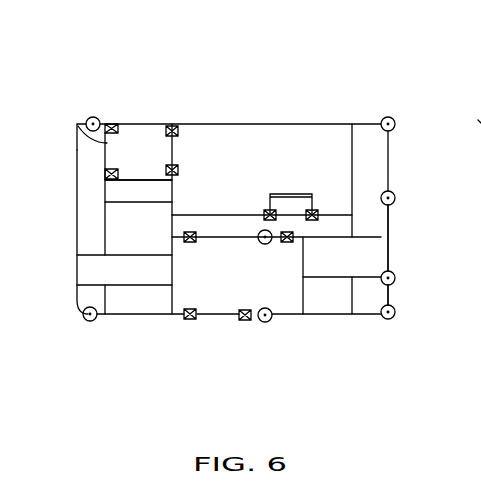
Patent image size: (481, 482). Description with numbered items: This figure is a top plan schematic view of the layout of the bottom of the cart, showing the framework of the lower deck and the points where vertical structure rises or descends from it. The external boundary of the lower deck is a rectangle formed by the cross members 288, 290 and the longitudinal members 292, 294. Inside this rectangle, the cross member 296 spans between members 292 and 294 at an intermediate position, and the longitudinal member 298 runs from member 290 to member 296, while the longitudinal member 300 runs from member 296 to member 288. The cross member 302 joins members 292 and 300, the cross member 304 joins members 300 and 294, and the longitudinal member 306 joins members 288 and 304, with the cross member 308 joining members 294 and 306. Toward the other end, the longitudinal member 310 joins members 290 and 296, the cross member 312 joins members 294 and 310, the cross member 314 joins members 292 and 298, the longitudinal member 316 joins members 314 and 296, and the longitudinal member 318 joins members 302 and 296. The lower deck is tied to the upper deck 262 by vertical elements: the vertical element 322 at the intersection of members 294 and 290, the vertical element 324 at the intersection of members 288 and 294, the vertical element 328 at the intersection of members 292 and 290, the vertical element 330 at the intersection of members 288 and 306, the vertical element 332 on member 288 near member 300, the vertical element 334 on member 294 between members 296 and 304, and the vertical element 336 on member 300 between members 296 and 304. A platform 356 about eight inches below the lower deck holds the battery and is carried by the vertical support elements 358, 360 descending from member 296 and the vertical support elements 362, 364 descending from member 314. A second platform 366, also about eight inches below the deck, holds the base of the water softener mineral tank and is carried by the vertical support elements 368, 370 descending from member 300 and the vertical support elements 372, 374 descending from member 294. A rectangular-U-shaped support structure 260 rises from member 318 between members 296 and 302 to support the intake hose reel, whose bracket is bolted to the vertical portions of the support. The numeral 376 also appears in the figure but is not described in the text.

The rectangular-U-shaped support structure 260 is at (299, 193).
The upper deck 262 is at (480, 121).
The cross member 288 is at (392, 218).
The cross member 290 is at (77, 168).
The longitudinal member 292 is at (302, 124).
The longitudinal member 294 is at (150, 316).
The cross member 296 is at (173, 152).
The longitudinal member 298 is at (88, 257).
The longitudinal member 300 is at (370, 238).
The cross member 302 is at (366, 123).
The cross member 304 is at (303, 291).
The longitudinal member 306 is at (369, 274).
The cross member 308 is at (352, 300).
The longitudinal member 310 is at (93, 285).
The cross member 312 is at (107, 297).
The cross member 314 is at (77, 120).
The longitudinal member 316 is at (133, 203).
The longitudinal member 318 is at (250, 211).
The vertical element 322 is at (88, 322).
The vertical element 324 is at (392, 319).
The vertical element 328 is at (97, 117).
The vertical element 330 is at (397, 288).
The vertical element 332 is at (394, 191).
The vertical element 334 is at (269, 321).
The vertical element 336 is at (258, 234).
The platform 356 is at (140, 150).
The vertical support element 358 is at (203, 128).
The vertical support element 360 is at (177, 169).
The vertical support element 362 is at (107, 177).
The vertical support element 364 is at (116, 124).
The platform 366 is at (223, 285).
The vertical support element 368 is at (190, 243).
The vertical support element 370 is at (342, 260).
The vertical support element 372 is at (246, 321).
The vertical support element 374 is at (191, 321).
The port 376 is at (396, 113).